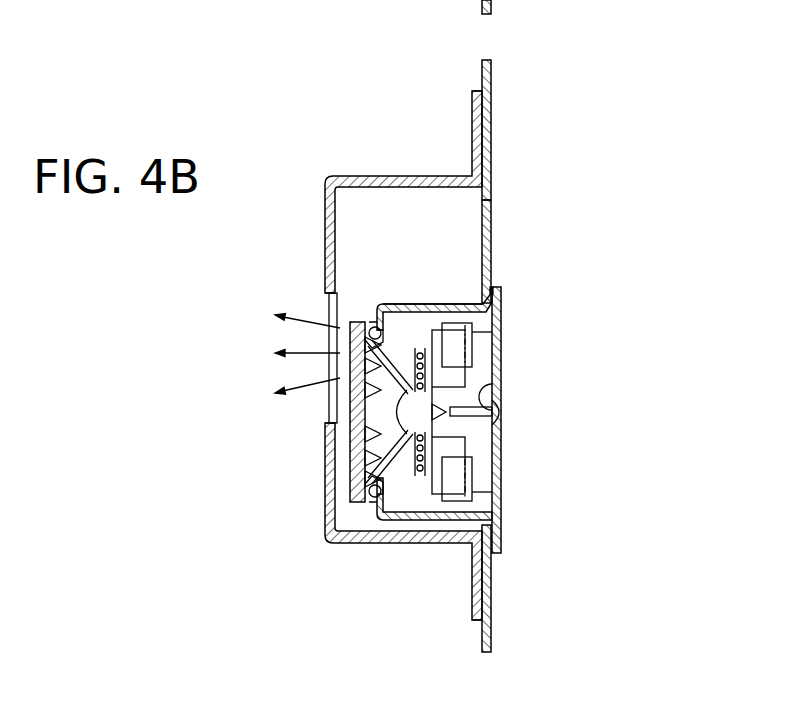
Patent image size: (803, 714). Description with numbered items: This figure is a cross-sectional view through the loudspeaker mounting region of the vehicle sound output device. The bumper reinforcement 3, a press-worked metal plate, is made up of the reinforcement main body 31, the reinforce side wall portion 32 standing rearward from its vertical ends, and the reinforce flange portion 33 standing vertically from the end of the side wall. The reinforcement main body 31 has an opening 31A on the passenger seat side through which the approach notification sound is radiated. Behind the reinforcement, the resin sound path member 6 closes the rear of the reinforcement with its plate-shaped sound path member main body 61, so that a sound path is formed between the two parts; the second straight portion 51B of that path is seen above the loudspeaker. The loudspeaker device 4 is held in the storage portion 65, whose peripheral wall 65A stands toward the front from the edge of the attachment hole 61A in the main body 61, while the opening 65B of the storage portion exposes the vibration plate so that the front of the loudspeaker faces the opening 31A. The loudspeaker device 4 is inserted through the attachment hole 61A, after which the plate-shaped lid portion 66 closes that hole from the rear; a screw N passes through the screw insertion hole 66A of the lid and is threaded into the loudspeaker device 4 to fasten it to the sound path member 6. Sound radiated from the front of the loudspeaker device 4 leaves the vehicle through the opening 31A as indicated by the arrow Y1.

The bumper reinforcement 3 is at (332, 355).
The reinforcement main body 31 is at (325, 470).
The opening 31A is at (335, 370).
The reinforce side wall portion 32 is at (432, 182).
The reinforce flange portion 33 is at (482, 105).
The loudspeaker device 4 is at (470, 340).
The second straight portion 51B is at (388, 236).
The sound path member 6 is at (495, 158).
The sound path member main body 61 is at (493, 240).
The attachment hole 61A is at (497, 310).
The storage portion 65 is at (368, 327).
The peripheral wall 65A is at (446, 306).
The opening 65B is at (352, 320).
The lid portion 66 is at (497, 486).
The screw insertion hole 66A is at (496, 390).
The screw N is at (503, 412).
The arrow Y1 is at (300, 320).